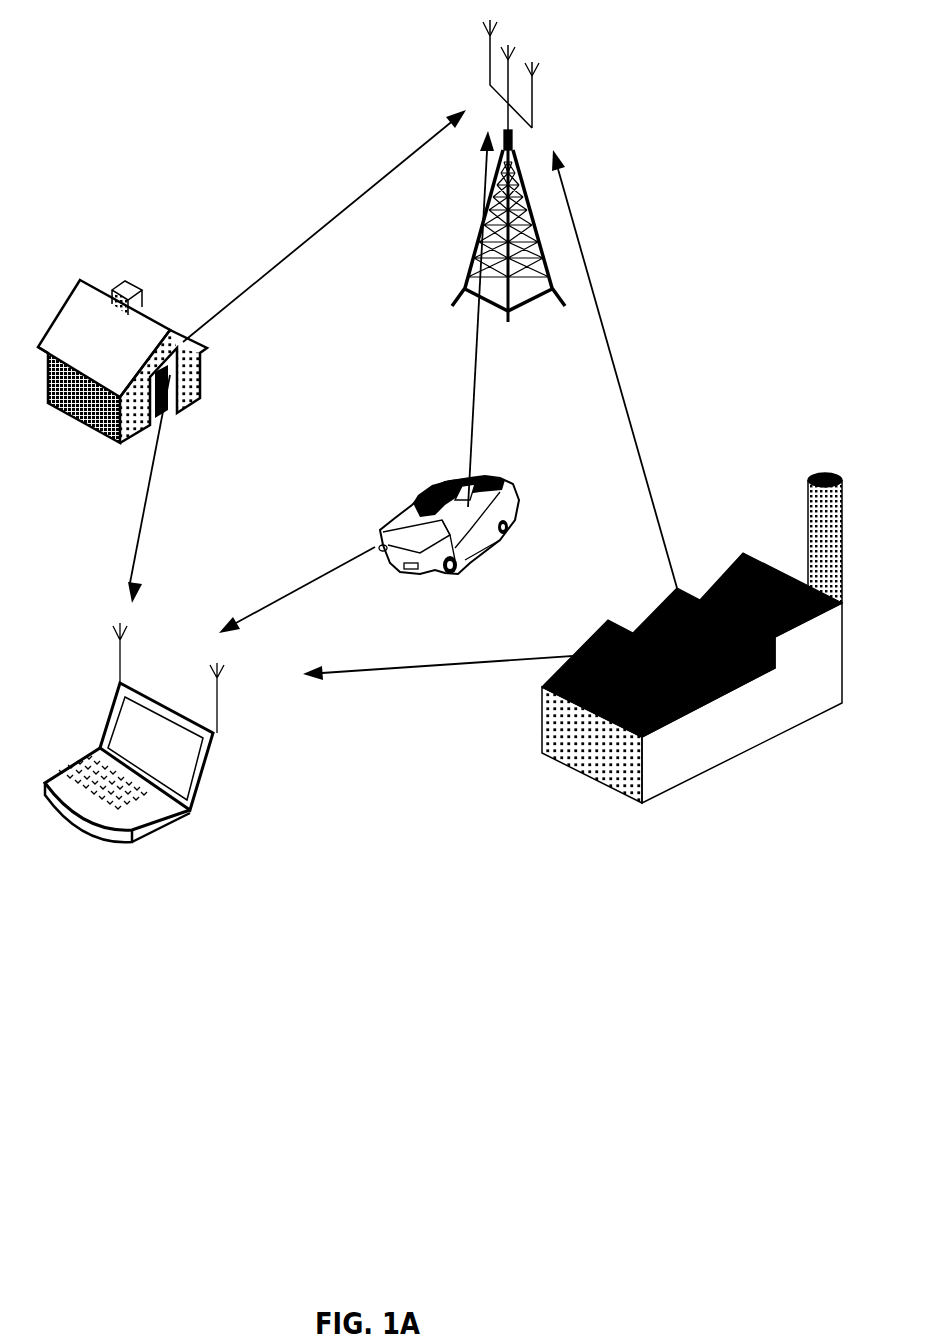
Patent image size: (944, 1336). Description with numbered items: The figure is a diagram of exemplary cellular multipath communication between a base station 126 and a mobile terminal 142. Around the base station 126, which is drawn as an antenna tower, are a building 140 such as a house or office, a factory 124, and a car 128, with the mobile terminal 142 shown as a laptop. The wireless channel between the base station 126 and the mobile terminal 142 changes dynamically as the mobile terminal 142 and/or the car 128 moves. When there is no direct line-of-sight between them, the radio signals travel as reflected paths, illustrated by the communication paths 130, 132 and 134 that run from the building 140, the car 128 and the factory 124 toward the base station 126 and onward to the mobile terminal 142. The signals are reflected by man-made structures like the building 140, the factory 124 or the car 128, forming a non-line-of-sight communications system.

The factory 124 is at (660, 790).
The base station 126 is at (508, 322).
The car 128 is at (450, 575).
The communication path 130 is at (262, 275).
The communication path 132 is at (473, 428).
The communication path 134 is at (625, 400).
The building 140 is at (85, 282).
The mobile terminal 142 is at (210, 755).